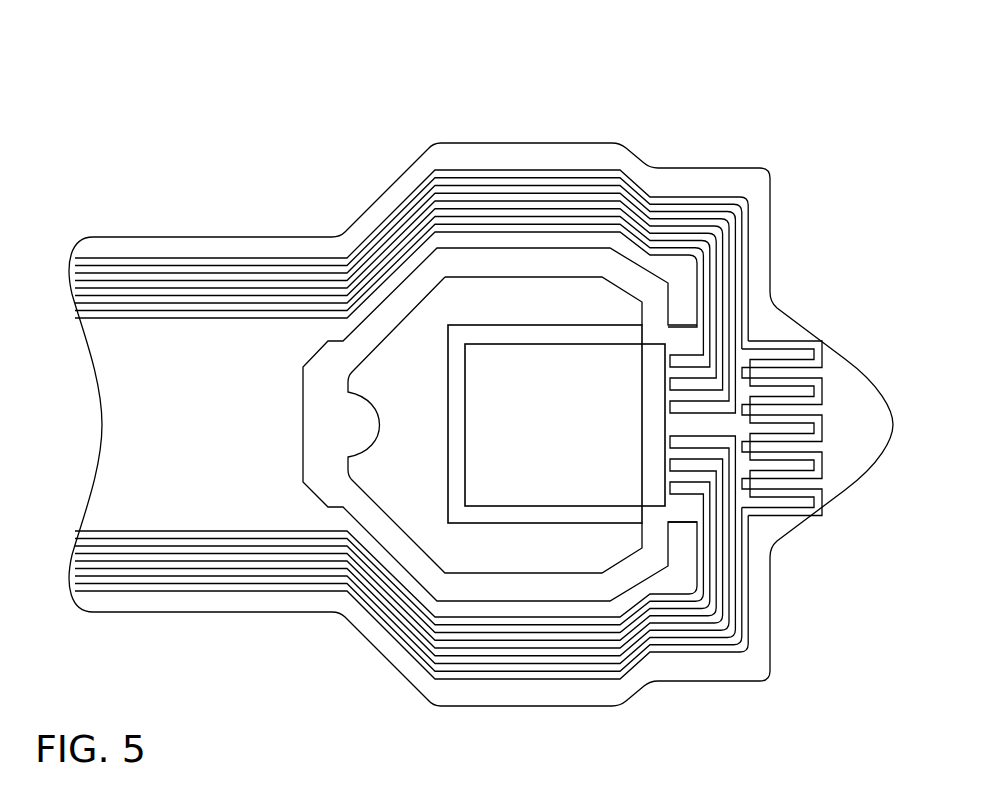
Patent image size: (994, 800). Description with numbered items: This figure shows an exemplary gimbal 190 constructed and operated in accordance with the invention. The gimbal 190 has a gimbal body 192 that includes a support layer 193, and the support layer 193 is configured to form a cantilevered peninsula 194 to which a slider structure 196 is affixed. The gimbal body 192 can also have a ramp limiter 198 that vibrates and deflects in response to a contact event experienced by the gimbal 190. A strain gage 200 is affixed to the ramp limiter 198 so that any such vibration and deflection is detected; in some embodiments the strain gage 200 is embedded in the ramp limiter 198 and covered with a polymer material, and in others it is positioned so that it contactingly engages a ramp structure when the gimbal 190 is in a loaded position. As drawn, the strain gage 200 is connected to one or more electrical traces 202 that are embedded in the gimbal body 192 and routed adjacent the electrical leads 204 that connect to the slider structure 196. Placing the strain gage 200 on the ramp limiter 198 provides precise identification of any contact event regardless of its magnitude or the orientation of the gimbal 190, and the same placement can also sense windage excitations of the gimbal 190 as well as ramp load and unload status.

The gimbal 190 is at (176, 86).
The gimbal body 192 is at (449, 404).
The support layer 193 is at (487, 249).
The cantilevered peninsula 194 is at (585, 305).
The slider structure 196 is at (529, 507).
The ramp limiter 198 is at (856, 522).
The strain gage 200 is at (835, 375).
The electrical traces 202 is at (64, 262).
The electrical leads 204 is at (62, 556).